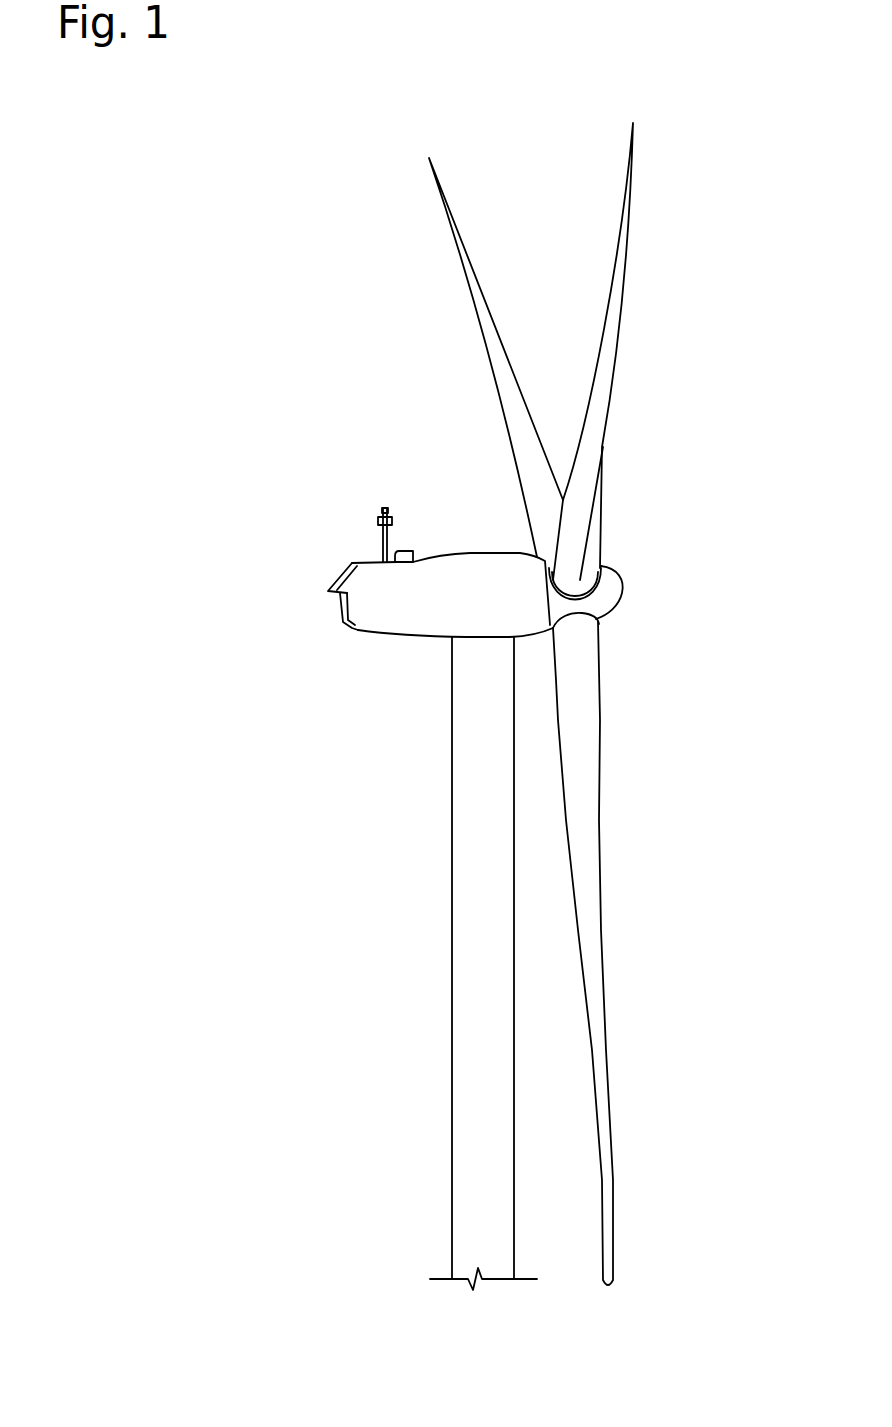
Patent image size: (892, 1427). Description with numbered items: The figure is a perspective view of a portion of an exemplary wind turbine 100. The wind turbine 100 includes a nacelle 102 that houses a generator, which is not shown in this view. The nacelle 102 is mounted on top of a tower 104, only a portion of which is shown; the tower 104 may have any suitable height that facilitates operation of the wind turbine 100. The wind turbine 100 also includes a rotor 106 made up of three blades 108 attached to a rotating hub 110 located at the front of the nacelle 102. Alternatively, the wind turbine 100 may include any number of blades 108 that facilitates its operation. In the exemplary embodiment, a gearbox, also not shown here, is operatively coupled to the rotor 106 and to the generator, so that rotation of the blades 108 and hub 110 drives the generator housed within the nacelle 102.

The wind turbine 100 is at (318, 205).
The nacelle 102 is at (378, 637).
The tower 104 is at (452, 910).
The rotor 106 is at (672, 337).
The blades 108 is at (467, 242).
The rotating hub 110 is at (620, 590).